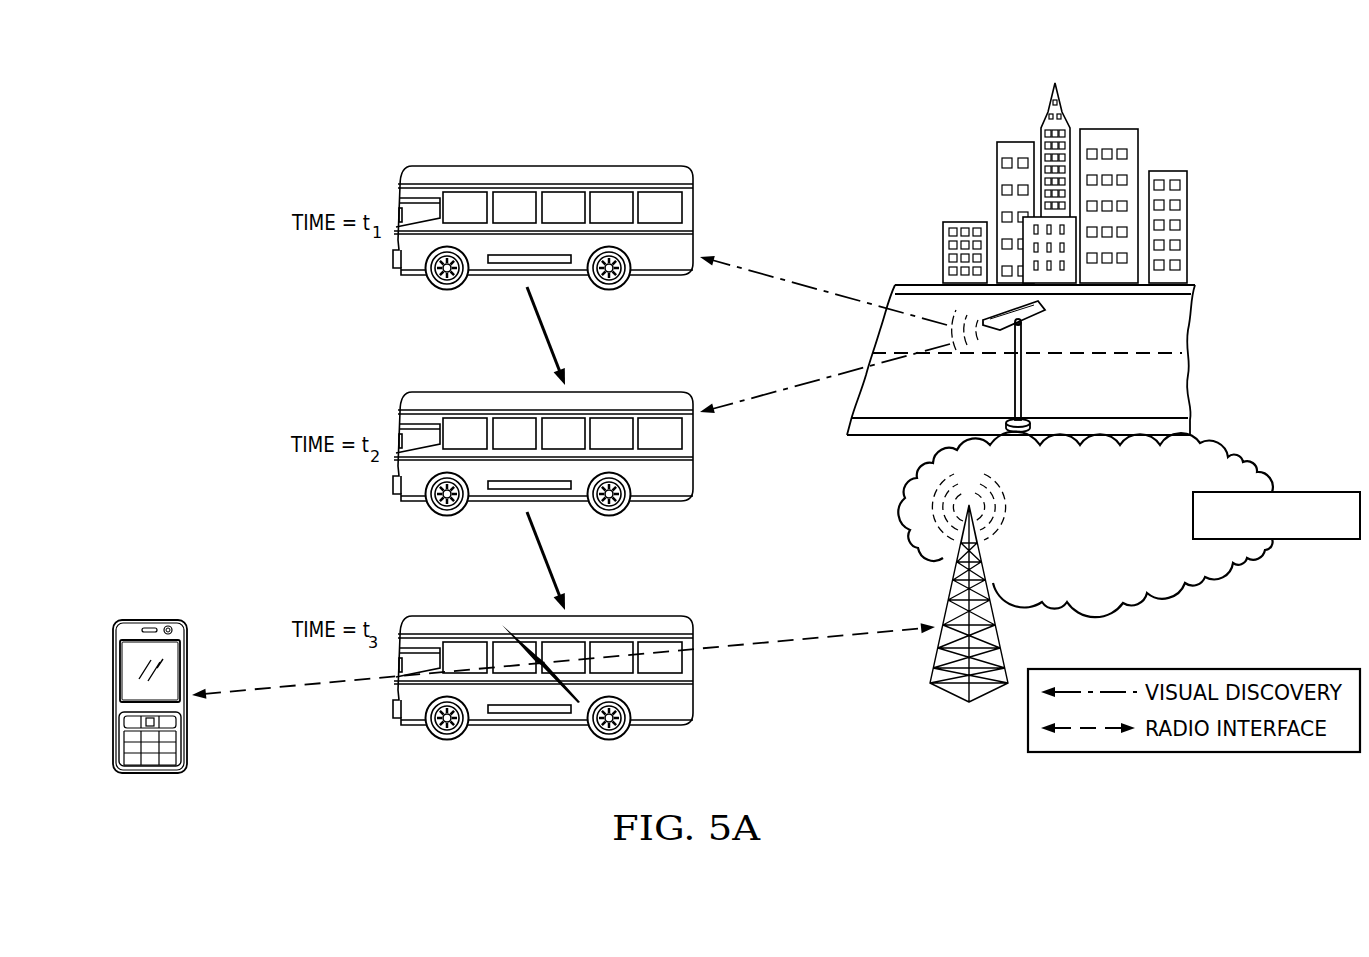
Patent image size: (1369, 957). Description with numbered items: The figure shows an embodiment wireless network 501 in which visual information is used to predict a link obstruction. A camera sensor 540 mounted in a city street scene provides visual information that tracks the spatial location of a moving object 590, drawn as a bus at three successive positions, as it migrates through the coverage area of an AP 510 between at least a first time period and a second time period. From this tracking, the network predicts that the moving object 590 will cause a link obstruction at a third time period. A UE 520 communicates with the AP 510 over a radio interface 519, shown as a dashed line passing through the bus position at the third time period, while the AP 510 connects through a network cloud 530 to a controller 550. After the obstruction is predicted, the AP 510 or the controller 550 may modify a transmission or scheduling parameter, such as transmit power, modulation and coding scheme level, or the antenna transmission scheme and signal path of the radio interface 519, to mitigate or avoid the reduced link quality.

The wireless network 501 is at (290, 111).
The AP 510 is at (950, 688).
The radio interface 519 is at (832, 638).
The UE 520 is at (150, 774).
The network 530 is at (1117, 535).
The camera sensor 540 is at (920, 215).
The controller 550 is at (1288, 540).
The moving object 590 is at (546, 164).